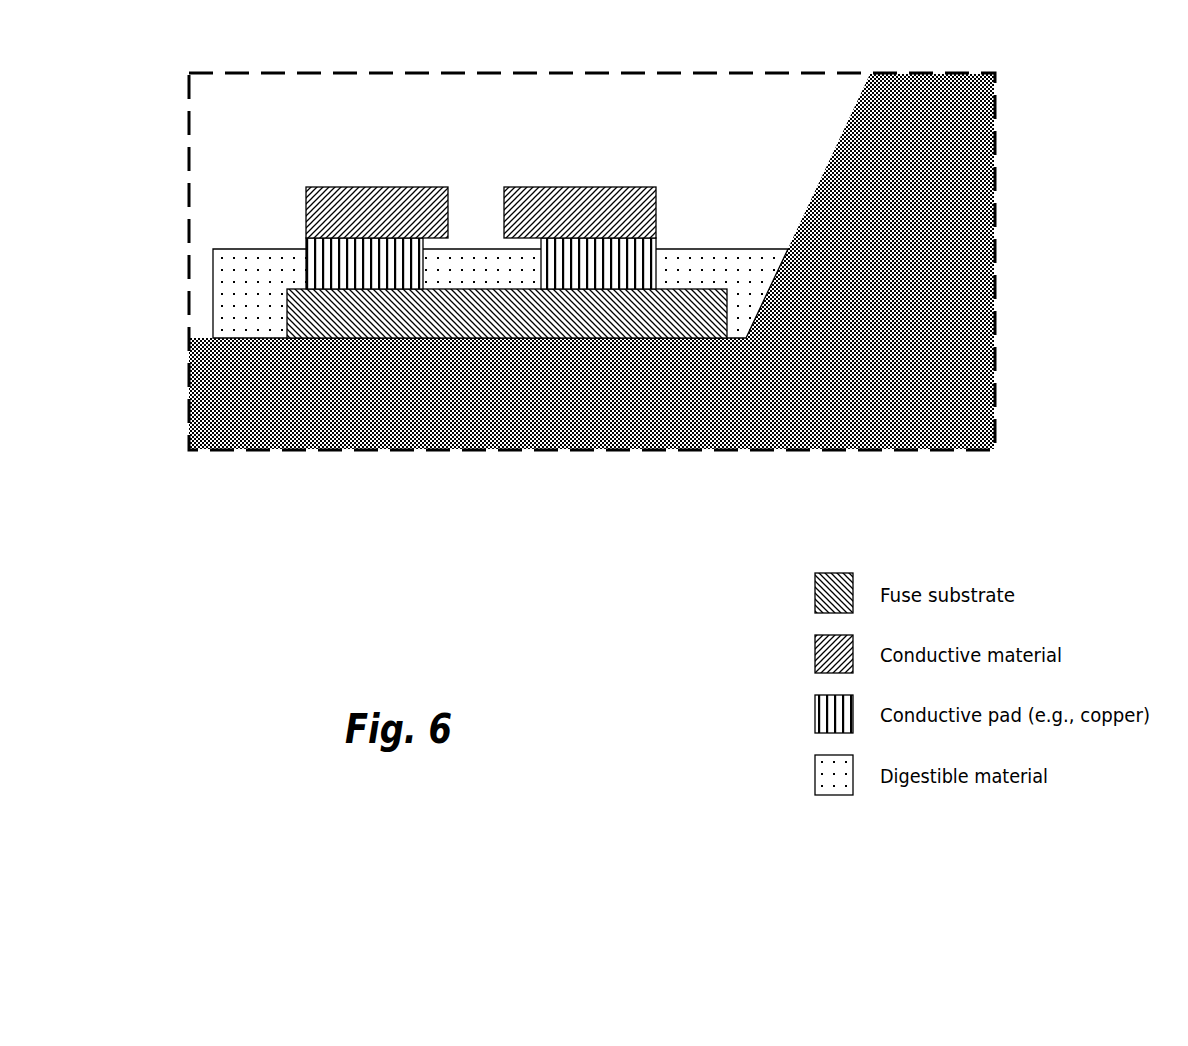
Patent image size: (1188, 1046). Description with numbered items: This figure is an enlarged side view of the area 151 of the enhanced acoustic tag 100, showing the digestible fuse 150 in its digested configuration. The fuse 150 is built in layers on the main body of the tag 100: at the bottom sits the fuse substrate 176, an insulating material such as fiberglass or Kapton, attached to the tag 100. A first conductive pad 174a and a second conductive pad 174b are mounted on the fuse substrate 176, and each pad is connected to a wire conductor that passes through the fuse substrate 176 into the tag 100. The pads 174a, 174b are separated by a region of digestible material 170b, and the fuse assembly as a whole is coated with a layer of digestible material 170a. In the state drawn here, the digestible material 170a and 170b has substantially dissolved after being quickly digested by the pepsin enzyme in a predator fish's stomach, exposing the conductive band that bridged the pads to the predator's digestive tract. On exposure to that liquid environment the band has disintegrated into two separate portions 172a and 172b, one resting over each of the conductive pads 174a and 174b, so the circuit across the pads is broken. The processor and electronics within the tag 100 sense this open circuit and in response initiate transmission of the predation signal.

The enhanced acoustic tag 100 is at (627, 406).
The digestible fuse 150 is at (500, 222).
The area 151 is at (679, 73).
The digestible material 170a is at (263, 282).
The digestible material 170b is at (496, 282).
The conductive band portion 172a is at (399, 223).
The conductive band portion 172b is at (600, 223).
The first conductive pad 174a is at (386, 277).
The second conductive pad 174b is at (622, 277).
The fuse substrate 176 is at (507, 313).